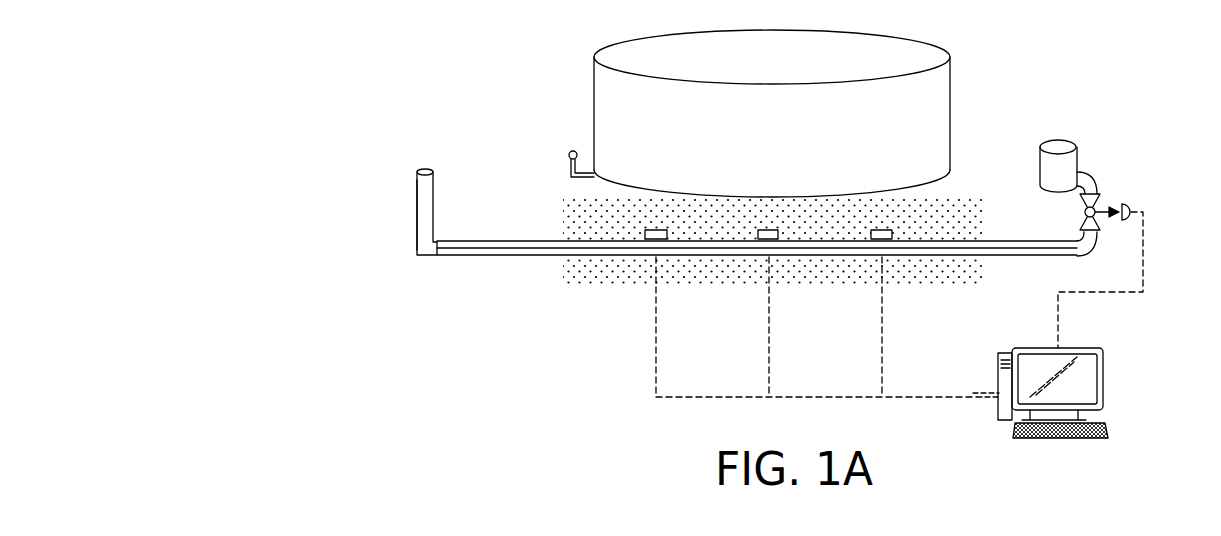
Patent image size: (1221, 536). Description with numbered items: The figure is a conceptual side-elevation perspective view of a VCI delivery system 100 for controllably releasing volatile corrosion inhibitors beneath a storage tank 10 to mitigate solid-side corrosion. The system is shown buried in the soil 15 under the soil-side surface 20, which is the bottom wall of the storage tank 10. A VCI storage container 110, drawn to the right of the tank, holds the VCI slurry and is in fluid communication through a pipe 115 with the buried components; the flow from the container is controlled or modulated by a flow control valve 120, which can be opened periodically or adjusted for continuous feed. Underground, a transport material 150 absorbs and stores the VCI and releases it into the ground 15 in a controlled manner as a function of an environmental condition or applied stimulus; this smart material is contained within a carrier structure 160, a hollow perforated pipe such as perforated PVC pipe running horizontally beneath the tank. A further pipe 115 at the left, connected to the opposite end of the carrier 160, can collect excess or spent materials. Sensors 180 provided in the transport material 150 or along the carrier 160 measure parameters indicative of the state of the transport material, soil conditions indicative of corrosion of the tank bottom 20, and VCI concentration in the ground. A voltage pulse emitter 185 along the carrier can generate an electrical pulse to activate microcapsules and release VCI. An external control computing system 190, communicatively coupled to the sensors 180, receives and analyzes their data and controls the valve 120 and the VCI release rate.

The VCI delivery system 100 is at (1015, 57).
The storage tank 10 is at (794, 142).
The soil 15 is at (617, 230).
The soil-side surface 20 is at (793, 196).
The VCI storage container 110 is at (1078, 156).
The pipe 115 is at (417, 200).
The flow control valve 120 is at (1101, 206).
The transport material 150 is at (484, 256).
The carrier structure 160 is at (525, 240).
The sensors 180 is at (652, 240).
The voltage pulse emitter 185 is at (763, 241).
The control computing system 190 is at (1103, 366).